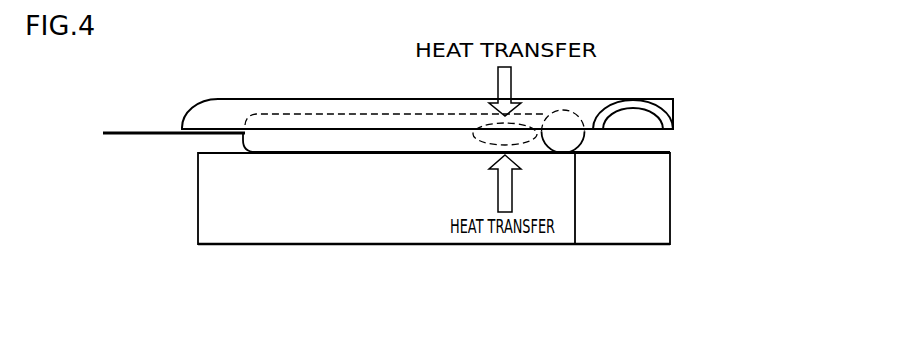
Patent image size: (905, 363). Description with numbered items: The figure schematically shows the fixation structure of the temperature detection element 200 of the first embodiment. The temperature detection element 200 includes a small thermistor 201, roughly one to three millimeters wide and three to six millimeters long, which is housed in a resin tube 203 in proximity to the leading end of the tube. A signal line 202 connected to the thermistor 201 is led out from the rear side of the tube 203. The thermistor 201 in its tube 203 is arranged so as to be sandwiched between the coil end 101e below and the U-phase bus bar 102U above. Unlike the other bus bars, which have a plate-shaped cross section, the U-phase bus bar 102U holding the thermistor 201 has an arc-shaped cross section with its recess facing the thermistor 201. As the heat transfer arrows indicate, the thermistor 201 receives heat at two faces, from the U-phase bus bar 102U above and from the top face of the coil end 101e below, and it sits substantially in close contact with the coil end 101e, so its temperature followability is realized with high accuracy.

The U-phase bus bar 102U is at (227, 117).
The temperature detection element 200 is at (386, 216).
The thermistor 201 is at (480, 138).
The signal line 202 is at (225, 135).
The resin tube 203 is at (560, 200).
The coil end 101e is at (622, 220).